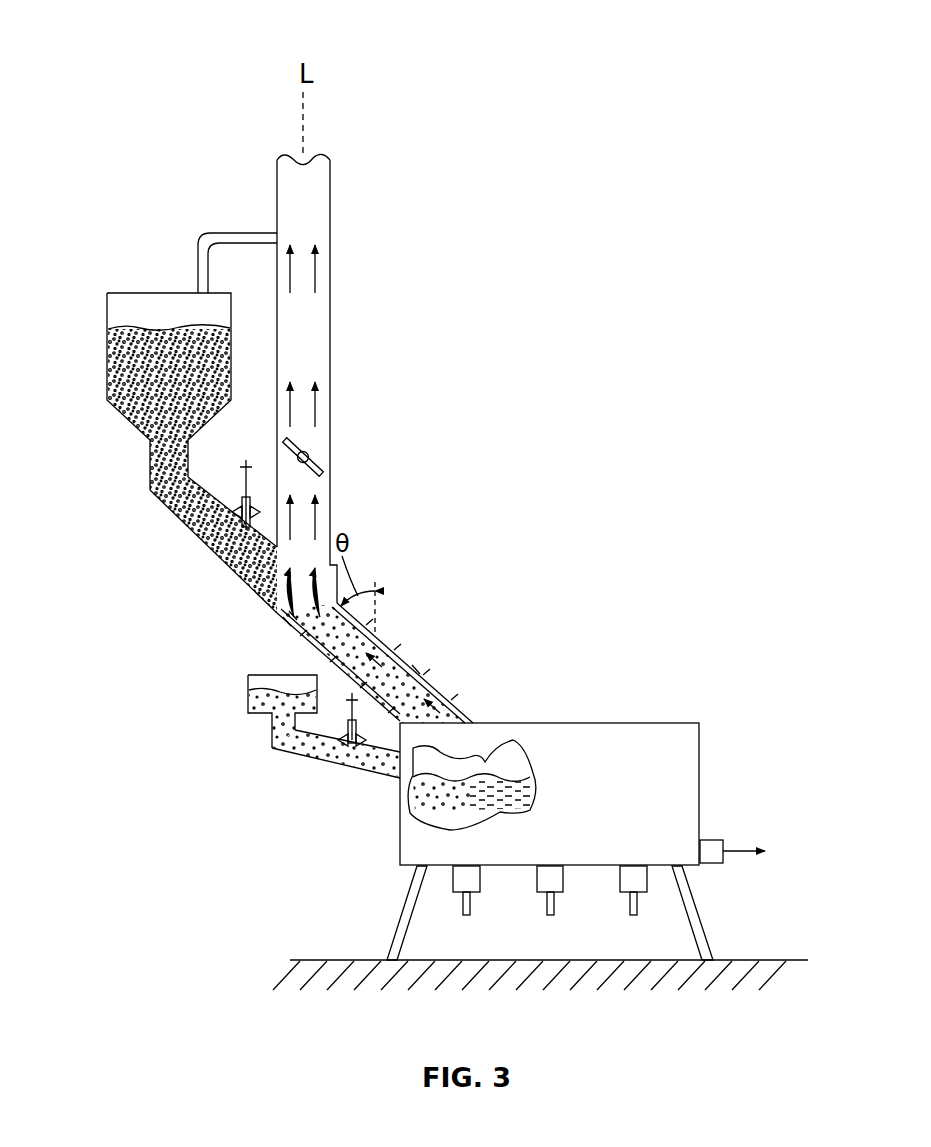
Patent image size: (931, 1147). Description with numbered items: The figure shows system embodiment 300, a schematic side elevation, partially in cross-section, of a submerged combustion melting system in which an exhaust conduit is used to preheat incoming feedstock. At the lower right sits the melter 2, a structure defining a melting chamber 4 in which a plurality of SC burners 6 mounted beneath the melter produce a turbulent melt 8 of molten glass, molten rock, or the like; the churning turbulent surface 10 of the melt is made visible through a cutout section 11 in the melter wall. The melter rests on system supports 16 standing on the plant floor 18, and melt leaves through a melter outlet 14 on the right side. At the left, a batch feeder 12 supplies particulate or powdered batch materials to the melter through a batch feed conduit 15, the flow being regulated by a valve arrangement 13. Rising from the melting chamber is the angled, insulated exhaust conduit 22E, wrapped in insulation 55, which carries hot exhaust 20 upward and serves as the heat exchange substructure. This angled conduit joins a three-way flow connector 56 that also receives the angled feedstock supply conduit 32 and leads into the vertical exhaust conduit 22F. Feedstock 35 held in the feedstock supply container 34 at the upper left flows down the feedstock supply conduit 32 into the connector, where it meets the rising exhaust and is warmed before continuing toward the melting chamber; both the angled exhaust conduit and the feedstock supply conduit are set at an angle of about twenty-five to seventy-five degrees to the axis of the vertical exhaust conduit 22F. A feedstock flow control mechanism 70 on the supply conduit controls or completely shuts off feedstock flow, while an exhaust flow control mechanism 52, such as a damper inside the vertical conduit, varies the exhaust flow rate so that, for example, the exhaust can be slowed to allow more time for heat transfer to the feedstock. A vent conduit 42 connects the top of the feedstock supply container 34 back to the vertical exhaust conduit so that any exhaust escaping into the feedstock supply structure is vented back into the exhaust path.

The system embodiment 300 is at (140, 54).
The melter 2 is at (660, 723).
The melting chamber 4 is at (517, 763).
The SC burners 6 is at (455, 878).
The turbulent melt 8 is at (525, 800).
The turbulent surface 10 is at (525, 776).
The cutout section 11 is at (405, 812).
The batch feeder 12 is at (270, 732).
The valve arrangement 13 is at (352, 746).
The melter outlet 14 is at (705, 840).
The batch feed conduit 15 is at (290, 755).
The system supports 16 is at (395, 930).
The plant floor 18 is at (775, 960).
The exhaust 20 is at (490, 762).
The angled, insulated exhaust conduit 22E is at (384, 642).
The vertical exhaust conduit 22F is at (332, 333).
The feedstock supply conduit 32 is at (180, 518).
The feedstock supply container 34 is at (108, 352).
The feedstock 35 is at (187, 328).
The vent conduit 42 is at (258, 232).
The exhaust flow control mechanism 52 is at (318, 468).
The insulation 55 is at (418, 673).
The 3-way flow connector 56 is at (286, 633).
The feedstock flow control mechanism 70 is at (248, 505).